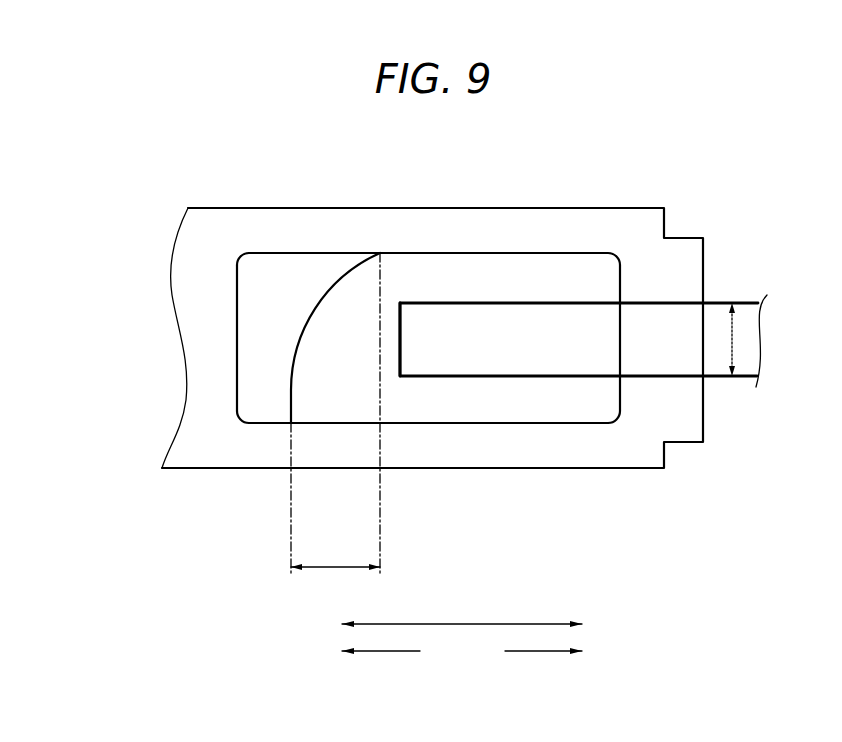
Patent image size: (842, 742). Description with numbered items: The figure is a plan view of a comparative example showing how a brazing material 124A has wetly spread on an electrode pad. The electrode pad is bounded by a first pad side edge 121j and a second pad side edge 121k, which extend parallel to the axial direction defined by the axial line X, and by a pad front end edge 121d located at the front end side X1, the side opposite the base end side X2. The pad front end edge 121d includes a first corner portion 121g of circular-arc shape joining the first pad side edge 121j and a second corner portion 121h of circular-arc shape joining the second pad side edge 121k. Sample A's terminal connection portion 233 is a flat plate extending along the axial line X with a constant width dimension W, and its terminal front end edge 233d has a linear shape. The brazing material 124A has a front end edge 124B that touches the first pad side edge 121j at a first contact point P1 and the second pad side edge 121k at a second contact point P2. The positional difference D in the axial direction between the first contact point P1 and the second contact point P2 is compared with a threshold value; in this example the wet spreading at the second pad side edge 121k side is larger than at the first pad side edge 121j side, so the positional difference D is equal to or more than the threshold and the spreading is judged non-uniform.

The pad front end edge 121d is at (237, 334).
The first corner portion 121g is at (236, 257).
The second corner portion 121h is at (238, 416).
The first pad side edge 121j is at (322, 253).
The second pad side edge 121k is at (266, 421).
The brazing material 124A is at (407, 267).
The front end edge of the brazing material 124B is at (297, 350).
The first contact point P1 is at (380, 253).
The second contact point P2 is at (293, 427).
The terminal connection portion 233 is at (473, 348).
The terminal front end edge 233d is at (401, 355).
The width dimension W is at (723, 339).
The positional difference D is at (335, 579).
The axial line X is at (465, 624).
The front end side X1 is at (412, 652).
The base end side X2 is at (516, 652).